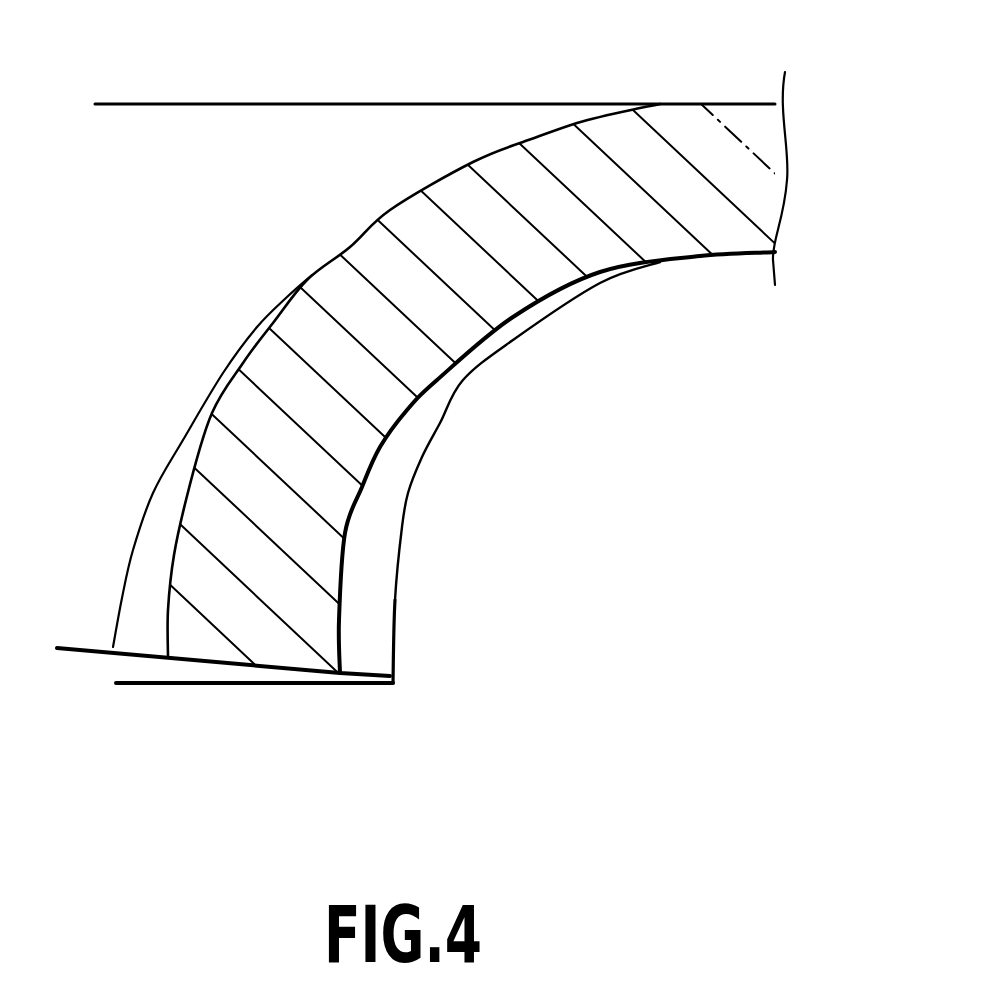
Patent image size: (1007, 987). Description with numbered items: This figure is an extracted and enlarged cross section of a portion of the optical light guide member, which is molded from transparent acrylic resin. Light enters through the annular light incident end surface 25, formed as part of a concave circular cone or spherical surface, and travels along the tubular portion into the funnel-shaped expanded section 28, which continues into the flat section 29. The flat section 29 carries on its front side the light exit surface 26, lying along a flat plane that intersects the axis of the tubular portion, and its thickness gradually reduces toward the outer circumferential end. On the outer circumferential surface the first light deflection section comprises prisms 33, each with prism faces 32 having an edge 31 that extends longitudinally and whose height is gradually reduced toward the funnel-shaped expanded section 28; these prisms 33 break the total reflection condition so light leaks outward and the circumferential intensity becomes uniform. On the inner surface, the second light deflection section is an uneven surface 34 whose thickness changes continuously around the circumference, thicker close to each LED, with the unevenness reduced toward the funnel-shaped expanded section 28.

The light incident end surface 25 is at (208, 662).
The light exit surface 26 is at (749, 103).
The funnel-shaped expanded section 28 is at (420, 360).
The flat section 29 is at (743, 233).
The edge 31 is at (395, 611).
The prism face 32 is at (380, 558).
The prism 33 is at (413, 667).
The uneven surface 34 is at (143, 590).